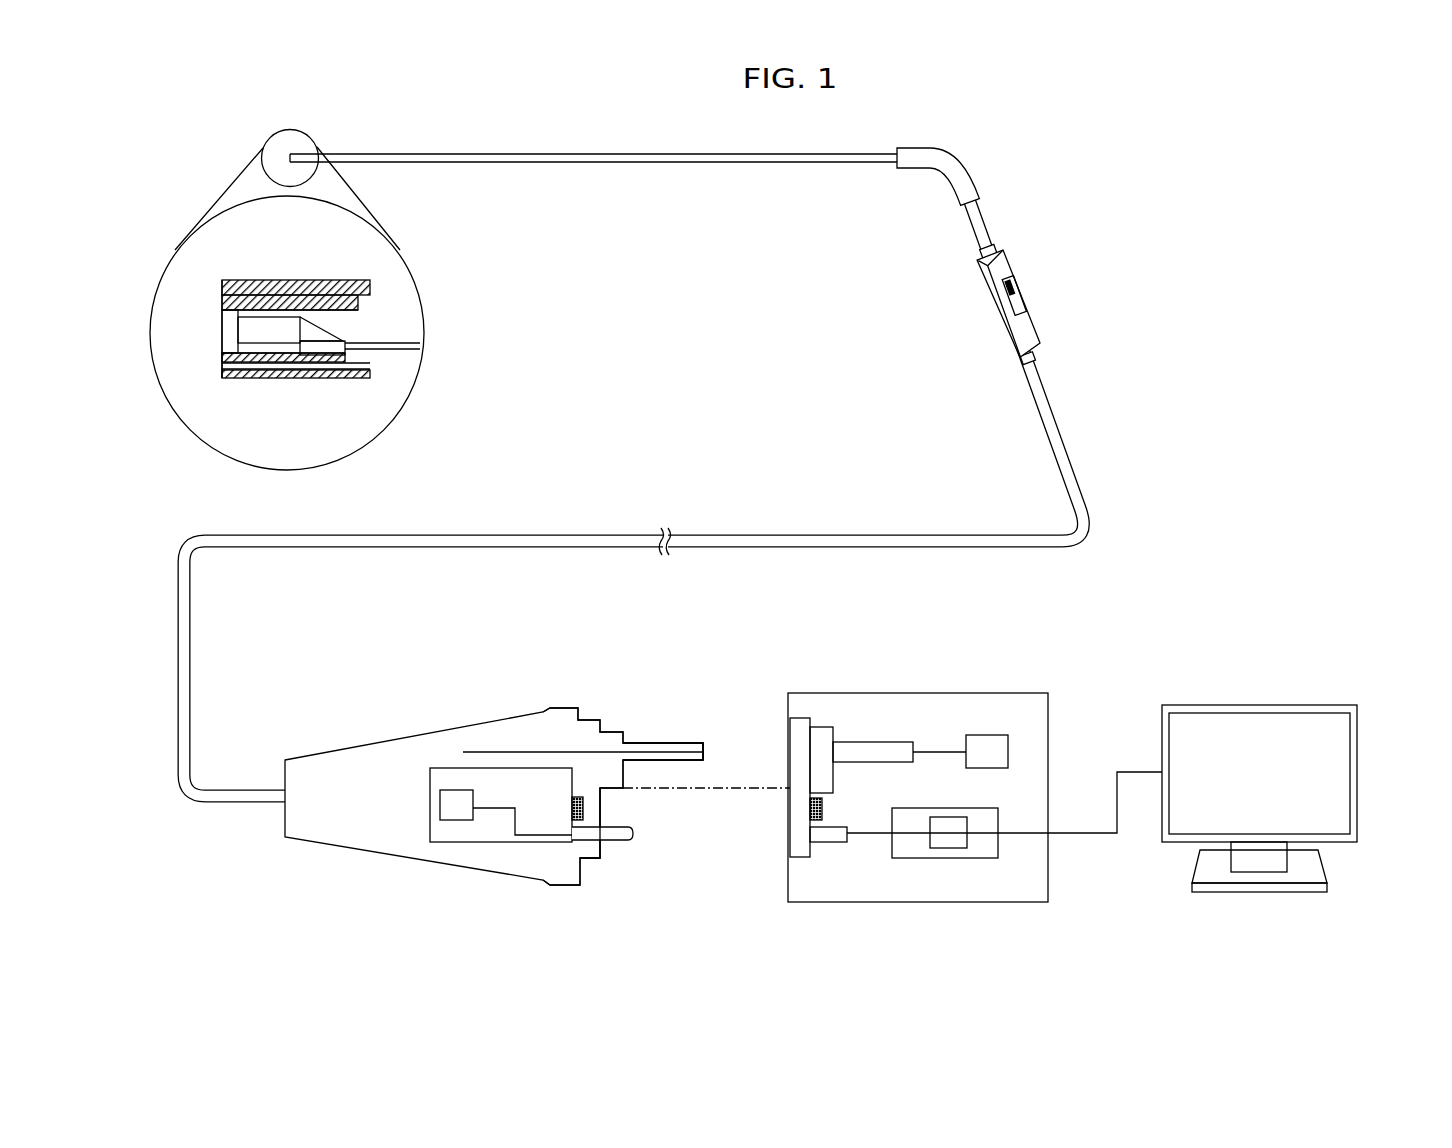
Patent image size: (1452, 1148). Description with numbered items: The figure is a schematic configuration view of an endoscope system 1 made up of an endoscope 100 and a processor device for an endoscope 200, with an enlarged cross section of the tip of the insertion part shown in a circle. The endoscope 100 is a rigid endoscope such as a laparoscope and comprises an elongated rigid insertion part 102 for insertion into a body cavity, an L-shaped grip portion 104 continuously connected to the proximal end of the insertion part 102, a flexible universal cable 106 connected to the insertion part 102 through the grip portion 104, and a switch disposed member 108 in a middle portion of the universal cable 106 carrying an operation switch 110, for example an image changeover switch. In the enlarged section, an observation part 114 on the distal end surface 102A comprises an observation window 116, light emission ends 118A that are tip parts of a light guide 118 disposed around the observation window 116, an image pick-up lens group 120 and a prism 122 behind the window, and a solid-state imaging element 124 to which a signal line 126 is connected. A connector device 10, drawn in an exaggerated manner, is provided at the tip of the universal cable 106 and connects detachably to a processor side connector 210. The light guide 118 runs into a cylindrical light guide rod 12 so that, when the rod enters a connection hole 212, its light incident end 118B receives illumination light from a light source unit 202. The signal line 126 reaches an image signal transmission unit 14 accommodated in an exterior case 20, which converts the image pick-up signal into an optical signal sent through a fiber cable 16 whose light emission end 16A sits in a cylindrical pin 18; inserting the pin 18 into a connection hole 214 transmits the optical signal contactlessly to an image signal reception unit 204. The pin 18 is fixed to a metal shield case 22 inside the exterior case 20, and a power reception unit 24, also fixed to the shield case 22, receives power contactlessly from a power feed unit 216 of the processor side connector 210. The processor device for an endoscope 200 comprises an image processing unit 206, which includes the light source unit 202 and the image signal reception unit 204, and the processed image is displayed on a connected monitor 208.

The endoscope system 1 is at (1062, 147).
The endoscope 100 is at (738, 170).
The insertion part 102 is at (594, 154).
The distal end surface 102A is at (289, 158).
The grip portion 104 is at (950, 160).
The universal cable 106 is at (984, 226).
The switch disposed member 108 is at (996, 300).
The operation switch 110 is at (1025, 285).
The observation part 114 is at (221, 312).
The observation window 116 is at (222, 332).
The light guide 118 is at (330, 371).
The light emission ends 118A is at (222, 364).
The light incident end 118B is at (704, 752).
The image pick-up lens group 120 is at (258, 315).
The prism 122 is at (318, 333).
The solid-state imaging element 124 is at (345, 333).
The signal line 126 is at (385, 349).
The connector device 10 is at (594, 705).
The light guide rod 12 is at (663, 743).
The image signal transmission unit 14 is at (455, 821).
The fiber cable 16 is at (497, 809).
The light emission end 16A is at (634, 833).
The pin 18 is at (620, 842).
The exterior case 20 is at (415, 731).
The shield case 22 is at (429, 824).
The power reception unit 24 is at (584, 808).
The processor device for an endoscope 200 is at (1038, 676).
The light source unit 202 is at (988, 735).
The image signal reception unit 204 is at (950, 849).
The image processing unit 206 is at (986, 859).
The monitor 208 is at (1357, 768).
The processor side connector 210 is at (792, 765).
The connection hole 212 is at (872, 742).
The connection hole 214 is at (830, 843).
The power feed unit 216 is at (823, 808).